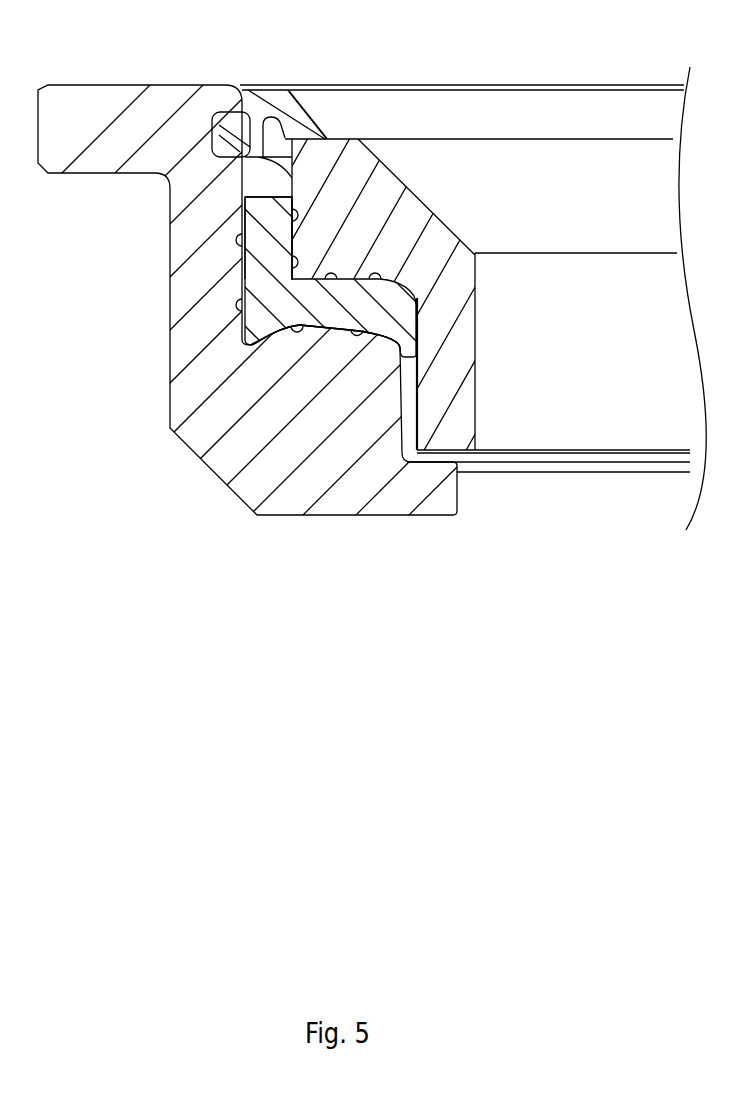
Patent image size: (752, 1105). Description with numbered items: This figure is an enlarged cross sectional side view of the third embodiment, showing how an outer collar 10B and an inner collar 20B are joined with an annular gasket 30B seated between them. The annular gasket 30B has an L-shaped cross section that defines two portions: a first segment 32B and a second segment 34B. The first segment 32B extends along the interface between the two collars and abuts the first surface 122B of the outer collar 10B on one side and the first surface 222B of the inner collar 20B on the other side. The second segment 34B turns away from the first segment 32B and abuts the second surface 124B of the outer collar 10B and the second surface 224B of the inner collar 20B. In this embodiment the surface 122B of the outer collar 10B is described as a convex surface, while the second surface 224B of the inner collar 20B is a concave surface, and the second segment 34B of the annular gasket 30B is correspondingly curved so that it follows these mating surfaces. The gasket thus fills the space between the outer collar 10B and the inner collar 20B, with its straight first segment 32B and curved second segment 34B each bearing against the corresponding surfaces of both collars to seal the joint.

The outer collar 10B is at (170, 454).
The inner collar 20B is at (525, 153).
The annular gasket 30B is at (341, 322).
The first segment 32B is at (270, 217).
The second segment 34B is at (300, 335).
The first surface of outer collar 122B is at (240, 262).
The second surface of outer collar 124B is at (278, 340).
The first surface of inner collar 222B is at (264, 160).
The second surface of inner collar 224B is at (358, 278).